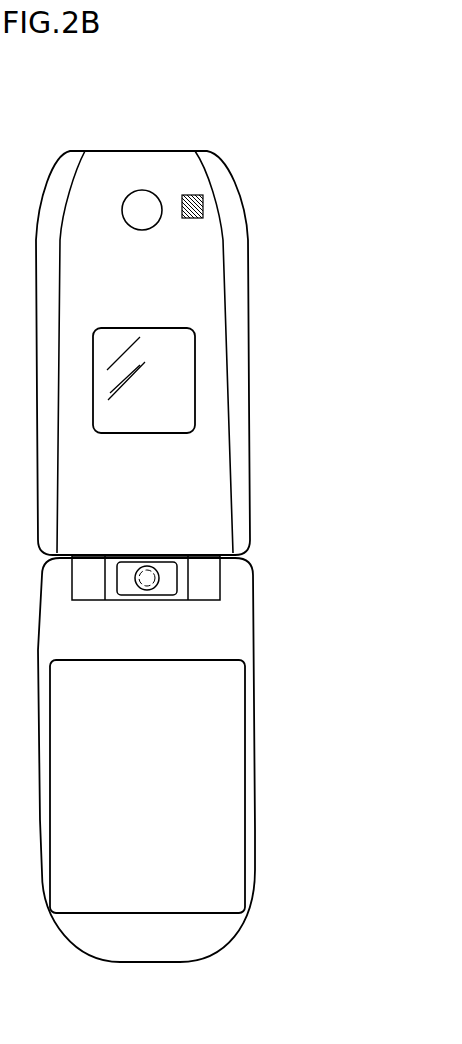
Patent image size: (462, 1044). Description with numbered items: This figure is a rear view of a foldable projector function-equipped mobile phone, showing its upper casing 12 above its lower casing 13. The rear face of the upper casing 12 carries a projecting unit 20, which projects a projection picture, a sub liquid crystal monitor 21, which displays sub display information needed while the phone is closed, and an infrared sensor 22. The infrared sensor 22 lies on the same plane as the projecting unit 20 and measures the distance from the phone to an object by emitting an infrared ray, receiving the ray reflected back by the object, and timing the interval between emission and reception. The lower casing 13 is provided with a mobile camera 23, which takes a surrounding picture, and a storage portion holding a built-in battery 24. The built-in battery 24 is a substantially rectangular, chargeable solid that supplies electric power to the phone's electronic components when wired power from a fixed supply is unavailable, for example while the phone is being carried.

The upper casing 12 is at (238, 294).
The lower casing 13 is at (232, 643).
The projecting unit 20 is at (141, 190).
The sub liquid crystal monitor 21 is at (163, 358).
The infrared sensor 22 is at (203, 200).
The mobile camera 23 is at (165, 574).
The built-in battery 24 is at (233, 773).